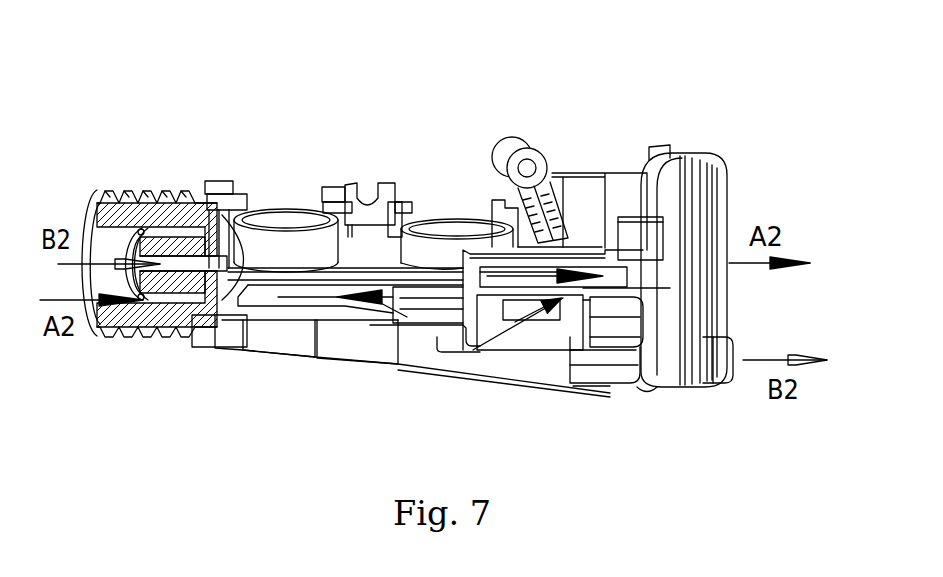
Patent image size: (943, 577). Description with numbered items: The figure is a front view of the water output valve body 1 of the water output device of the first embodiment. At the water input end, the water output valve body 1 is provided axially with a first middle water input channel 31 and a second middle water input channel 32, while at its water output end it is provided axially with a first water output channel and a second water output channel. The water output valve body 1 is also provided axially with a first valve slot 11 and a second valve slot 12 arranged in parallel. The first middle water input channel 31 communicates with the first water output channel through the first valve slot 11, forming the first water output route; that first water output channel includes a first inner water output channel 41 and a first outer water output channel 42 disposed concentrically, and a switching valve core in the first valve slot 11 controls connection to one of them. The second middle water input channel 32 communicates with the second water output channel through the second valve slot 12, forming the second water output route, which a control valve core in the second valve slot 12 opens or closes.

The water output valve body 1 is at (340, 388).
The first valve slot 11 is at (455, 228).
The second valve slot 12 is at (285, 218).
The first middle water input channel 31 is at (170, 302).
The second middle water input channel 32 is at (182, 262).
The first inner water output channel 41 is at (547, 330).
The first outer water output channel 42 is at (611, 272).